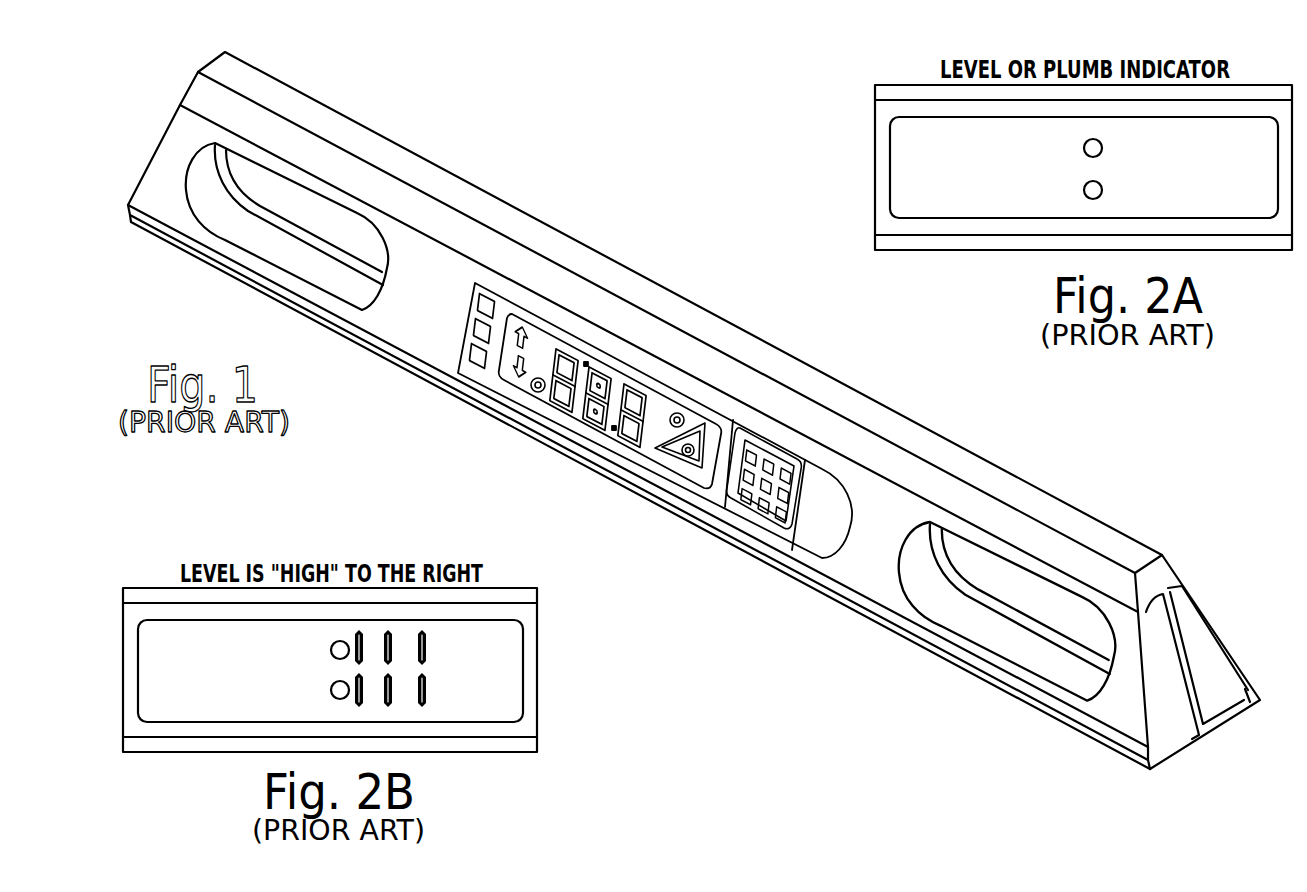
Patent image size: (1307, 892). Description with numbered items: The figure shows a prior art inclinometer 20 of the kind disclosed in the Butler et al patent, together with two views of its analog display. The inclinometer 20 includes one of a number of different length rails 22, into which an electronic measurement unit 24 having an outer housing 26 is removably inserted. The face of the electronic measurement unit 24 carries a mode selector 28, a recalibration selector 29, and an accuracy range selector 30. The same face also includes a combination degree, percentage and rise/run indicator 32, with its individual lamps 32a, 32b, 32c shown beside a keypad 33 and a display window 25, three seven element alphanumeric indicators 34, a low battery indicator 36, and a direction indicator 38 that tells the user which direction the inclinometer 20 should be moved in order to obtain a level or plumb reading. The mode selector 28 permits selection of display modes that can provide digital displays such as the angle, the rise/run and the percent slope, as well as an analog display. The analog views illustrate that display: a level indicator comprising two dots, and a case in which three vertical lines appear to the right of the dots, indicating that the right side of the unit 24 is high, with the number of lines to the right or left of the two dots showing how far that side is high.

The inclinometer 20 is at (694, 410).
The rail 22 is at (822, 383).
The electronic measurement unit 24 is at (645, 382).
The display window 25 is at (602, 330).
The outer housing 26 is at (616, 381).
The mode selector 28 is at (489, 298).
The recalibration selector 29 is at (474, 284).
The accuracy range selector 30 is at (471, 331).
The combination degree, percentage and rise/run indicator 32 is at (711, 419).
The indicator light 32a is at (678, 412).
The triangular indicator 32b is at (701, 424).
The indicator light 32c is at (703, 445).
The keypad 33 is at (786, 456).
The seven element alphanumeric indicators 34 is at (633, 445).
The low battery indicator 36 is at (533, 388).
The direction indicator 38 is at (507, 367).